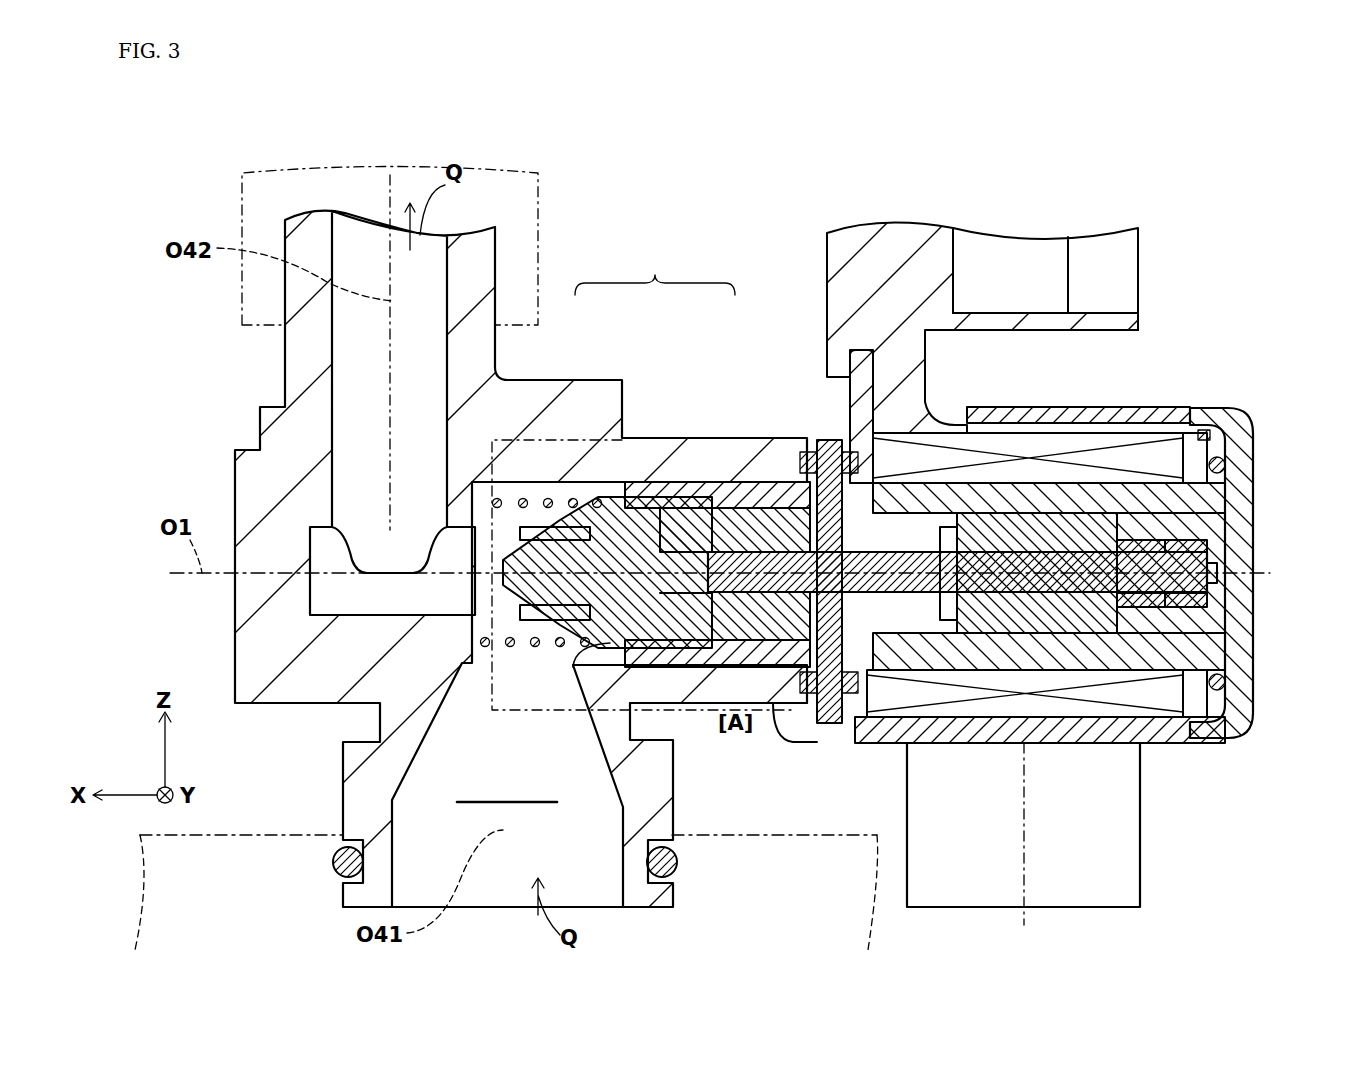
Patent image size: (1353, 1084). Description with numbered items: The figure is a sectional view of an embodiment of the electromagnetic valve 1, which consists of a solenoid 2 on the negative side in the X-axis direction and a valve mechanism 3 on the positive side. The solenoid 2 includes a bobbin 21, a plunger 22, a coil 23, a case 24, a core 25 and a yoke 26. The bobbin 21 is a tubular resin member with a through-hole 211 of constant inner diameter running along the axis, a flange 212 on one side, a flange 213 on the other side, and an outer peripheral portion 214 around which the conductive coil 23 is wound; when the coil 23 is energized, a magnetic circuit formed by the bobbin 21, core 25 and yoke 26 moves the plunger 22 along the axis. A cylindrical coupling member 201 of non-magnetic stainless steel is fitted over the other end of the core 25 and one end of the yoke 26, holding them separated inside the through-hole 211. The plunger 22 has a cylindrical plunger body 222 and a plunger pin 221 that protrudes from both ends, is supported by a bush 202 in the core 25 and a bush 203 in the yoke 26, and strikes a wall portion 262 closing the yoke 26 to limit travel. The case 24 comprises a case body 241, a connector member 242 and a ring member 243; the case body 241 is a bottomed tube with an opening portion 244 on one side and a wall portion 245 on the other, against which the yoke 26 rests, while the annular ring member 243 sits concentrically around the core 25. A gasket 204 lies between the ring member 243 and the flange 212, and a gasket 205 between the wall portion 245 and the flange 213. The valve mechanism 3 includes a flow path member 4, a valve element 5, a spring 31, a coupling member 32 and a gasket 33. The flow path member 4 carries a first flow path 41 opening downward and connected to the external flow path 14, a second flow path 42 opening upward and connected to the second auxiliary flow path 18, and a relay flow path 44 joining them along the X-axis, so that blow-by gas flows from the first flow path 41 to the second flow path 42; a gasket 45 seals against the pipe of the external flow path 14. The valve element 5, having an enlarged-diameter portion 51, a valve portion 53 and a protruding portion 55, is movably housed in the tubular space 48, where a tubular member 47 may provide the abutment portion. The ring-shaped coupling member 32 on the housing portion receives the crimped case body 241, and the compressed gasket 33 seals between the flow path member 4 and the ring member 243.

The electromagnetic valve 1 is at (1268, 165).
The solenoid 2 is at (1222, 318).
The valve mechanism 3 is at (222, 350).
The flow path member 4 is at (240, 440).
The valve element 5 is at (655, 275).
The external flow path 14 is at (260, 835).
The second auxiliary flow path 18 is at (245, 210).
The bobbin 21 is at (1200, 430).
The plunger 22 is at (1065, 470).
The coil 23 is at (995, 430).
The case 24 is at (1248, 412).
The core 25 is at (900, 600).
The yoke 26 is at (1100, 670).
The spring 31 is at (610, 480).
The coupling member 32 is at (765, 440).
The gasket 33 is at (838, 725).
The first flow path 41 is at (468, 885).
The second flow path 42 is at (360, 235).
The relay flow path 44 is at (565, 440).
The gasket 45 is at (680, 862).
The tubular member 47 is at (745, 482).
The tubular space 48 is at (640, 690).
The enlarged-diameter portion 51 is at (625, 520).
The valve portion 53 is at (545, 500).
The protruding portion 55 is at (705, 540).
The coupling member 201 is at (968, 640).
The bush 202 is at (925, 640).
The bush 203 is at (1160, 690).
The gasket 204 is at (852, 700).
The gasket 205 is at (1226, 465).
The through-hole 211 is at (1195, 425).
The flange 212 is at (880, 378).
The flange 213 is at (1215, 437).
The outer peripheral portion 214 is at (1010, 430).
The plunger pin 221 is at (1030, 640).
The plunger body 222 is at (1065, 640).
The case body 241 is at (1230, 745).
The connector member 242 is at (890, 250).
The ring member 243 is at (820, 440).
The opening portion 244 is at (805, 725).
The wall portion 245 is at (1245, 508).
The wall portion 262 is at (1160, 610).